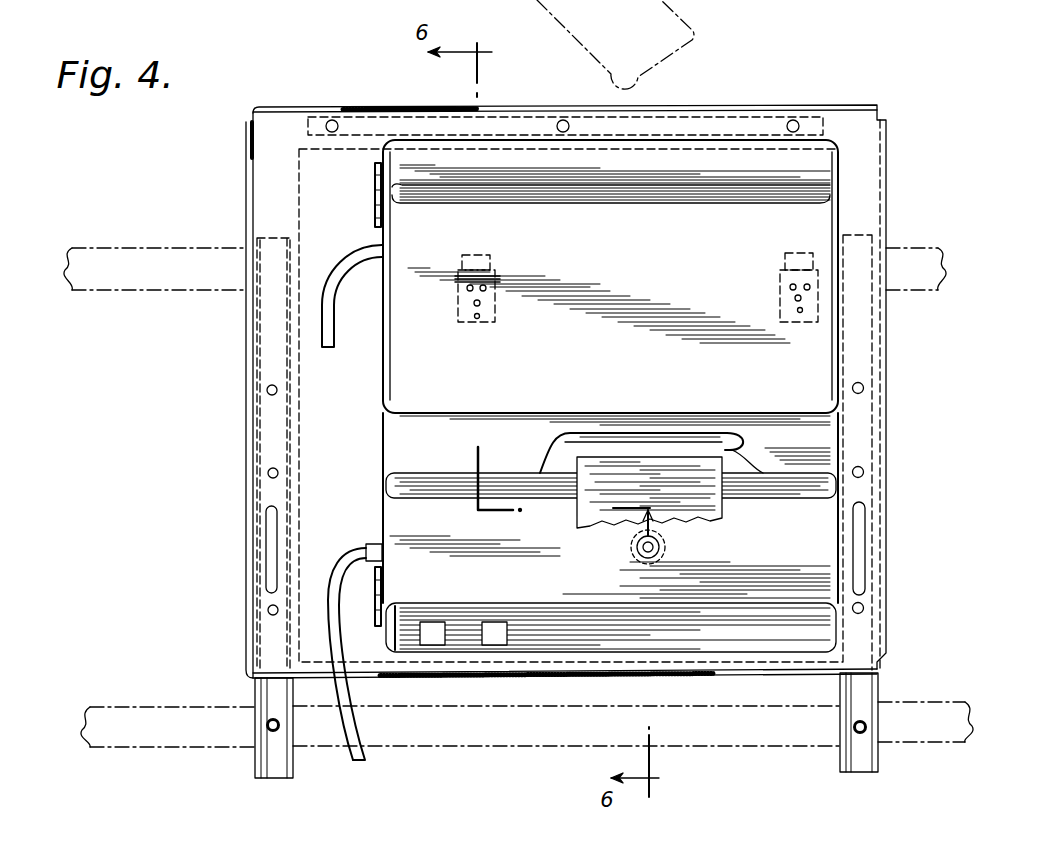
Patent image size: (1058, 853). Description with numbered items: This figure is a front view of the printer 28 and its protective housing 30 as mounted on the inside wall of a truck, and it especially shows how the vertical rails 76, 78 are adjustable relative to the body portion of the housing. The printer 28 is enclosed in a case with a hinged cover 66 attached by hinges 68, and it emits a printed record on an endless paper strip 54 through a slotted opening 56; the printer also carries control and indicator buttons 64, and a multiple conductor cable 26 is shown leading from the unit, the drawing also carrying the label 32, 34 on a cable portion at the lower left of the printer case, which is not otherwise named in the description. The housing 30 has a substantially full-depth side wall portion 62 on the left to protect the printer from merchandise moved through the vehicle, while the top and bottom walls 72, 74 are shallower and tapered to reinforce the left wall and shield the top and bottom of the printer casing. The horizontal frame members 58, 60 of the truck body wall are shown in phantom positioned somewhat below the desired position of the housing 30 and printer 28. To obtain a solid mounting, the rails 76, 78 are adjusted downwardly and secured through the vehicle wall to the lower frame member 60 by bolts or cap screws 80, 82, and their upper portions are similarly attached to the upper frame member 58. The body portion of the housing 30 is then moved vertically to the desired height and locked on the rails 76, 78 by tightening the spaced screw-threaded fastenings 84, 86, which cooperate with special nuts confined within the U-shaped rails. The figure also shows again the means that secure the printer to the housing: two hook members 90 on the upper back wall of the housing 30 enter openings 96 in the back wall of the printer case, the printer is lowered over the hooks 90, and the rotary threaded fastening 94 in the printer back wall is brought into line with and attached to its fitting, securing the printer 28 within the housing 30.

The multiple conductor cable 26 is at (332, 308).
The printer 28 is at (897, 329).
The printer housing 30 is at (348, 88).
The power cord 32 is at (328, 553).
The cable 34 is at (352, 659).
The endless paper strip 54 is at (722, 512).
The slotted opening 56 is at (740, 447).
The horizontal frame member 58 is at (132, 243).
The horizontal frame member 60 is at (120, 750).
The side wall portion 62 is at (247, 423).
The control and indicator buttons 64 is at (488, 622).
The hinged cover 66 is at (763, 162).
The hinges 68 is at (373, 185).
The top wall 72 is at (537, 107).
The bottom wall 74 is at (532, 676).
The vertical rail 76 is at (255, 687).
The vertical rail 78 is at (878, 687).
The bolt or cap screw 80 is at (266, 727).
The bolt or cap screw 82 is at (852, 725).
The screw-threaded fastenings 84 is at (266, 387).
The screw-threaded fastenings 86 is at (862, 393).
The hook members 90 is at (493, 252).
The rotary fastening 94 is at (633, 548).
The openings 96 is at (490, 325).